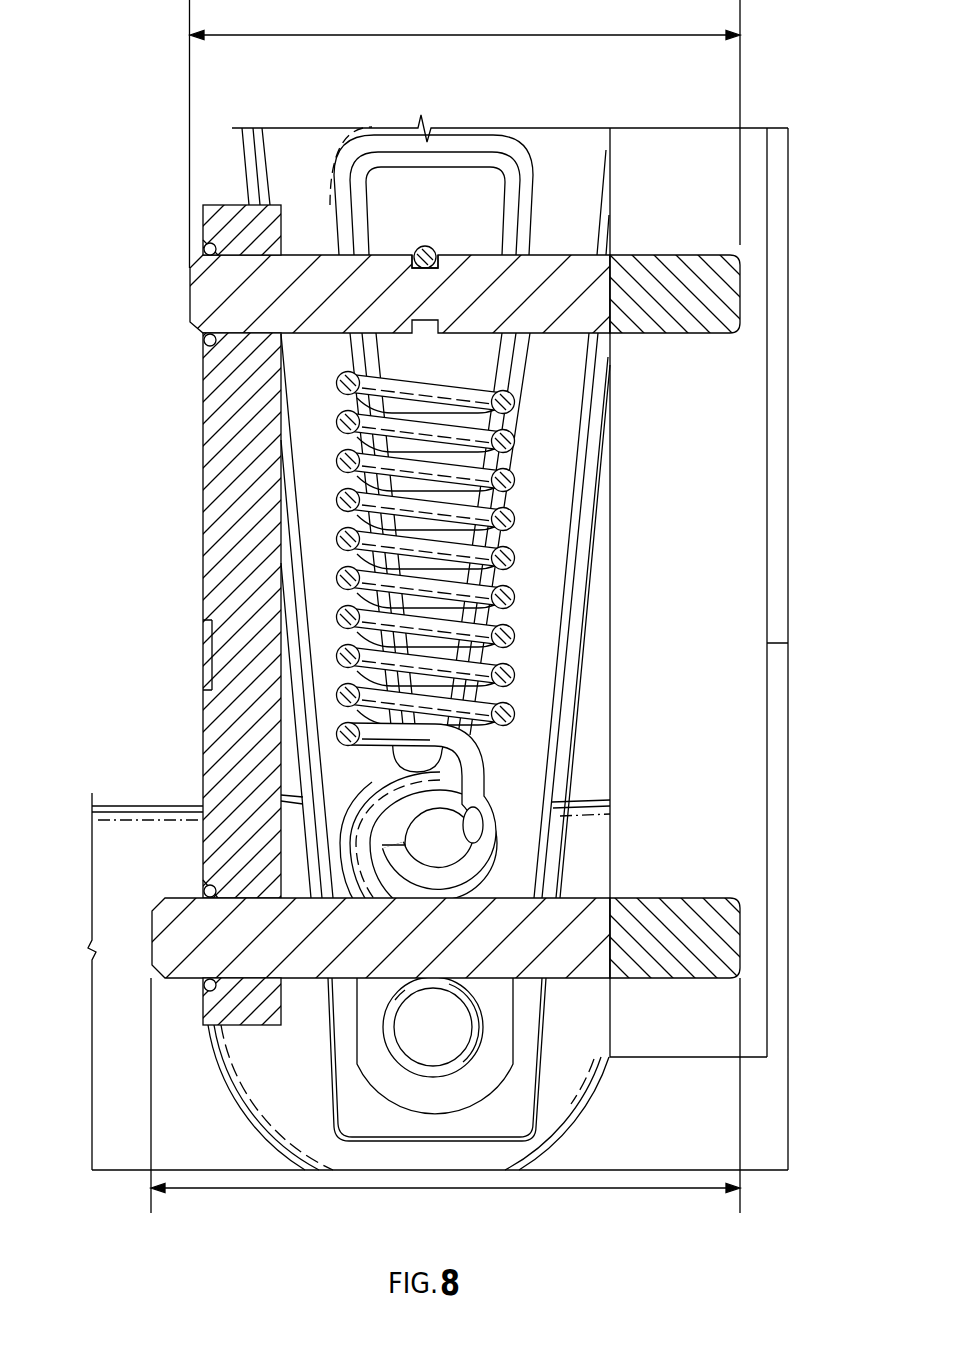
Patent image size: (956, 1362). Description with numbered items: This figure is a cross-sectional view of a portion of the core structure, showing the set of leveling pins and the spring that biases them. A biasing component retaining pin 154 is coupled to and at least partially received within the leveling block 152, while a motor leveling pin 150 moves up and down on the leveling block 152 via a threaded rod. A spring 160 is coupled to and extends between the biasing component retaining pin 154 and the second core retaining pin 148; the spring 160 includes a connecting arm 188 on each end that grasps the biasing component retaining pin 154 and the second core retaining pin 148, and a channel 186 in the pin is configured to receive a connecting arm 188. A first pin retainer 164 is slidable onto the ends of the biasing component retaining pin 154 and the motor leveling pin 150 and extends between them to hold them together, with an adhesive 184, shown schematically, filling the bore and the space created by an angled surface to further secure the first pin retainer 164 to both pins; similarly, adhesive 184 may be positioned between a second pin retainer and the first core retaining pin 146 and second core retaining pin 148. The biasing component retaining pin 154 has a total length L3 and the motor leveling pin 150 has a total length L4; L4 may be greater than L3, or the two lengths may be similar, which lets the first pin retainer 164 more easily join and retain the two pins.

The first core retaining pin 146 is at (420, 1028).
The second core retaining pin 148 is at (440, 843).
The motor leveling pin 150 is at (172, 953).
The leveling block 152 is at (792, 393).
The biasing component retaining pin 154 is at (228, 298).
The spring 160 is at (506, 519).
The first pin retainer 164 is at (196, 589).
The adhesive 184 is at (203, 342).
The channel 186 is at (407, 245).
The connecting arm 188 is at (428, 246).
The total length of biasing component retaining pin L3 is at (382, 34).
The total length of motor leveling pin L4 is at (340, 1190).